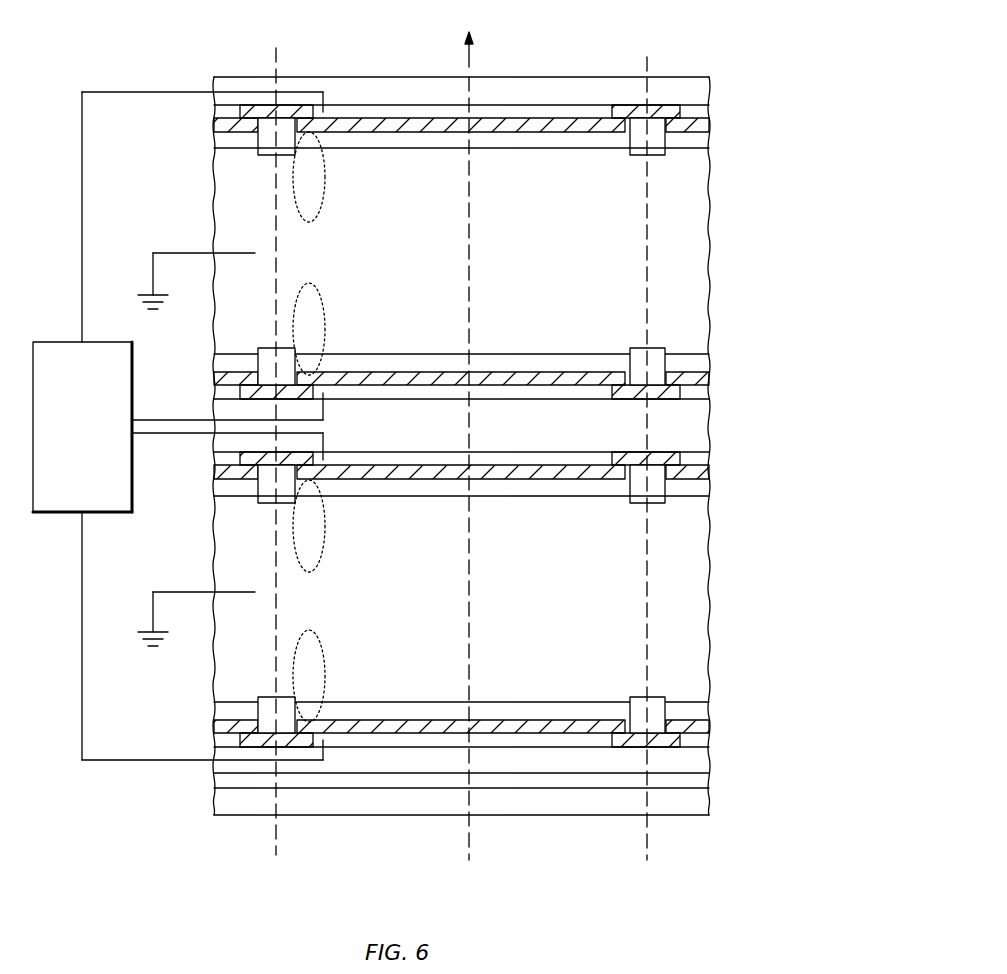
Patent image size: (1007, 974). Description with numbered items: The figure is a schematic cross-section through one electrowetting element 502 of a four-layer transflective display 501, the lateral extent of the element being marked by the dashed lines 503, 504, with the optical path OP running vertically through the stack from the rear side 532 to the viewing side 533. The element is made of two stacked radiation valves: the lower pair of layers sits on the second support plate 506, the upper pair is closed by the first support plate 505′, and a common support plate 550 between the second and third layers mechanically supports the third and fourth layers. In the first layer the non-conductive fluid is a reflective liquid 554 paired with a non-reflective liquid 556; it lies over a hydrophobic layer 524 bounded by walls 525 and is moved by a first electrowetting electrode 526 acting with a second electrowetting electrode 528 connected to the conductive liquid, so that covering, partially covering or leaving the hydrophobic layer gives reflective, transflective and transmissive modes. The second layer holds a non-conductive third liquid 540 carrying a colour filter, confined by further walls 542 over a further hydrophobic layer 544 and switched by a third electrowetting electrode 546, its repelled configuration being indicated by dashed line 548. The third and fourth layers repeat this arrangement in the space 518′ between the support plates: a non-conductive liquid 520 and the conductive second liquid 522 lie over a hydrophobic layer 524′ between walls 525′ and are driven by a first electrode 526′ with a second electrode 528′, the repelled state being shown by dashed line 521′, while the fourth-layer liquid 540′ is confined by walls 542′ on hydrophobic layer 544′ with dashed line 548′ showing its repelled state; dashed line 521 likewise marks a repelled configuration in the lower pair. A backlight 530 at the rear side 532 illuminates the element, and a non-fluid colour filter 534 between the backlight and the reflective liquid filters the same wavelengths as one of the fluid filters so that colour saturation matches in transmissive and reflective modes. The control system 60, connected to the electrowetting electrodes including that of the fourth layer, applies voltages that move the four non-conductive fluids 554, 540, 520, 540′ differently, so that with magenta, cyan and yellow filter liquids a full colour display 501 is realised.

The display device 501 is at (753, 63).
The electrowetting element 502 is at (393, 67).
The dashed line 503 is at (276, 58).
The dashed line 504 is at (647, 58).
The optical path OP is at (469, 52).
The first support plate 505′ is at (692, 92).
The second support plate 506 is at (697, 759).
The space 518′ is at (507, 174).
The non-conductive liquid 520 is at (612, 367).
The dashed line 521 is at (320, 647).
The dashed line 521′ is at (318, 298).
The second liquid 522 is at (693, 249).
The hydrophobic layer 524 is at (427, 722).
The hydrophobic layer 524′ is at (427, 372).
The walls 525 is at (270, 702).
The walls 525′ is at (270, 352).
The first electrowetting electrode 526 is at (542, 738).
The first electrowetting electrode 526′ is at (566, 392).
The second electrowetting electrode 528 is at (153, 600).
The second electrowetting electrode 528′ is at (153, 263).
The backlight 530 is at (697, 803).
The rear side 532 is at (565, 815).
The viewing side 533 is at (583, 77).
The non-fluid colour filter 534 is at (229, 782).
The third liquid 540 is at (612, 487).
The third liquid 540′ is at (612, 143).
The further walls 542 is at (268, 500).
The further walls 542′ is at (268, 152).
The further hydrophobic layer 544 is at (430, 480).
The further hydrophobic layer 544′ is at (425, 132).
The third electrowetting electrode 546 is at (430, 460).
The dashed line 548 is at (320, 553).
The dashed line 548′ is at (318, 205).
The common support plate 550 is at (693, 426).
The reflective liquid 554 is at (610, 713).
The non-reflective liquid 556 is at (693, 597).
The control system 60 is at (178, 426).